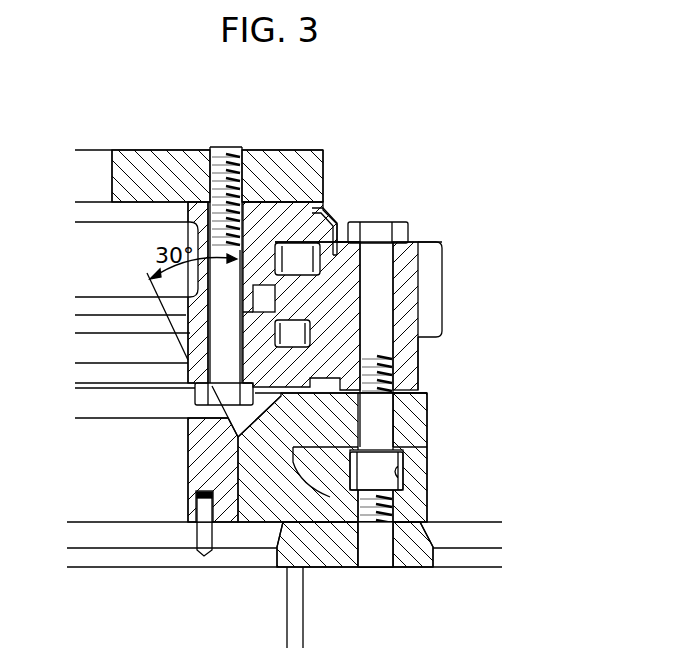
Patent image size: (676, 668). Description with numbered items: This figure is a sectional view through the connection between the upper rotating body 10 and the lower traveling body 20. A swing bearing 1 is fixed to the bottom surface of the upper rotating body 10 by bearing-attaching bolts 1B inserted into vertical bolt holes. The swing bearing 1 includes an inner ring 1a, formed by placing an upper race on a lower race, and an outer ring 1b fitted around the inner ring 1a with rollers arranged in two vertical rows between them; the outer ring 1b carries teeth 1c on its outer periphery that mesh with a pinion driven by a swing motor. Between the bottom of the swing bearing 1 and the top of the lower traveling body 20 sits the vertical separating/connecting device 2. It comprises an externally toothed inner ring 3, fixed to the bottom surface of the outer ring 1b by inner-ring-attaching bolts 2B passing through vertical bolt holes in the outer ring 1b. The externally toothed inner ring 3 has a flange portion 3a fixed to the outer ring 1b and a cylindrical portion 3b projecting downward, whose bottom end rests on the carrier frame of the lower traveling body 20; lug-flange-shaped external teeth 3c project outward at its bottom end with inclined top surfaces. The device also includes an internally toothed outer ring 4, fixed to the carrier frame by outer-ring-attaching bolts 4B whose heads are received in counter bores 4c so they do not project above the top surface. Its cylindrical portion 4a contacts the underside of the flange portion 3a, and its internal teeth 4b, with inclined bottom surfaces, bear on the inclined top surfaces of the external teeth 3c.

The upper rotating body 10 is at (152, 149).
The bearing-attaching bolts 1B is at (230, 149).
The swing bearing 1 is at (291, 197).
The inner ring 1a is at (193, 282).
The outer ring 1b is at (418, 362).
The teeth 1c is at (443, 283).
The inner-ring-attaching bolts 2B is at (385, 221).
The vertical separating/connecting device 2 is at (437, 456).
The externally toothed inner ring 3 is at (263, 524).
The flange portion 3a is at (426, 415).
The cylindrical portion 3b is at (270, 428).
The external teeth 3c is at (312, 473).
The internally toothed outer ring 4 is at (407, 525).
The cylindrical portion 4a is at (425, 495).
The internal teeth 4b is at (281, 566).
The counter bores 4c is at (400, 478).
The outer-ring-attaching bolts 4B is at (370, 560).
The lower traveling body 20 is at (98, 570).